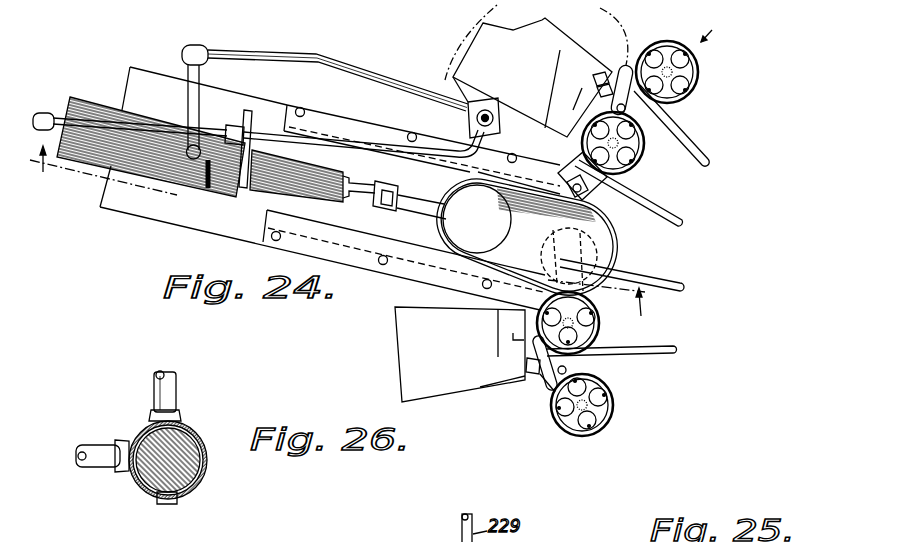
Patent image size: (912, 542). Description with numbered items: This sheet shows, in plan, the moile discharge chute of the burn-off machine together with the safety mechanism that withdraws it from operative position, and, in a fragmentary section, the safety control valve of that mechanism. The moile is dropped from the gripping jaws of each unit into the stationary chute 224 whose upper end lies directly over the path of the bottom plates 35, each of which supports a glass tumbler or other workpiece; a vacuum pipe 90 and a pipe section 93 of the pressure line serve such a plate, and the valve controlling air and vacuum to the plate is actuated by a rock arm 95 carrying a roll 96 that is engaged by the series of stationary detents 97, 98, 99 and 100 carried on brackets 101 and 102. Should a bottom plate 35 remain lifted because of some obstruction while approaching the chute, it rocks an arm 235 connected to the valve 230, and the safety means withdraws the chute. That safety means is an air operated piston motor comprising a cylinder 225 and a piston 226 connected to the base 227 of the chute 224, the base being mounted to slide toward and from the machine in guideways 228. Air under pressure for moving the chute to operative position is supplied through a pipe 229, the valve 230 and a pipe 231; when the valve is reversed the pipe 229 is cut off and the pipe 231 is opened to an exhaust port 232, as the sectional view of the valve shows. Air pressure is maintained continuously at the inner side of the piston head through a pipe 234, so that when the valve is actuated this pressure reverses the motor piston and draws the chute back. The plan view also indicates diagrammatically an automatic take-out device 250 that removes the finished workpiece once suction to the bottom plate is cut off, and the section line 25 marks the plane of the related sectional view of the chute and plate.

In FIG. 24, the section line 25 is at (353, 235).
In FIG. 24, the bottom plate 35 is at (699, 73).
In FIG. 24, the vacuum pipe 90 is at (676, 138).
In FIG. 24, the pipe section 93 is at (547, 389).
In FIG. 24, the rock arm 95 is at (530, 378).
In FIG. 24, the roll 96 is at (601, 74).
In FIG. 24, the stationary detent 97 is at (588, 78).
In FIG. 24, the stationary detent 98 is at (570, 107).
In FIG. 24, the stationary detent 99 is at (513, 333).
In FIG. 24, the stationary detent 100 is at (528, 380).
In FIG. 24, the bracket 101 is at (556, 42).
In FIG. 24, the bracket 102 is at (438, 392).
In FIG. 24, the stationary chute 224 is at (606, 254).
In FIG. 24, the cylinder 225 is at (89, 101).
In FIG. 24, the piston 226 is at (268, 186).
In FIG. 24, the base 227 is at (415, 205).
In FIG. 24, the guideways 228 is at (377, 250).
In FIG. 26, the pipe 229 is at (178, 383).
In FIG. 24, the valve 230 is at (488, 108).
In FIG. 26, the valve 230 is at (198, 473).
In FIG. 24, the pipe 231 is at (255, 133).
In FIG. 26, the pipe 231 is at (84, 467).
In FIG. 26, the exhaust port 232 is at (164, 504).
In FIG. 24, the pipe 234 is at (202, 77).
In FIG. 24, the arm 235 is at (612, 177).
In FIG. 24, the automatic take-out device 250 is at (464, 70).